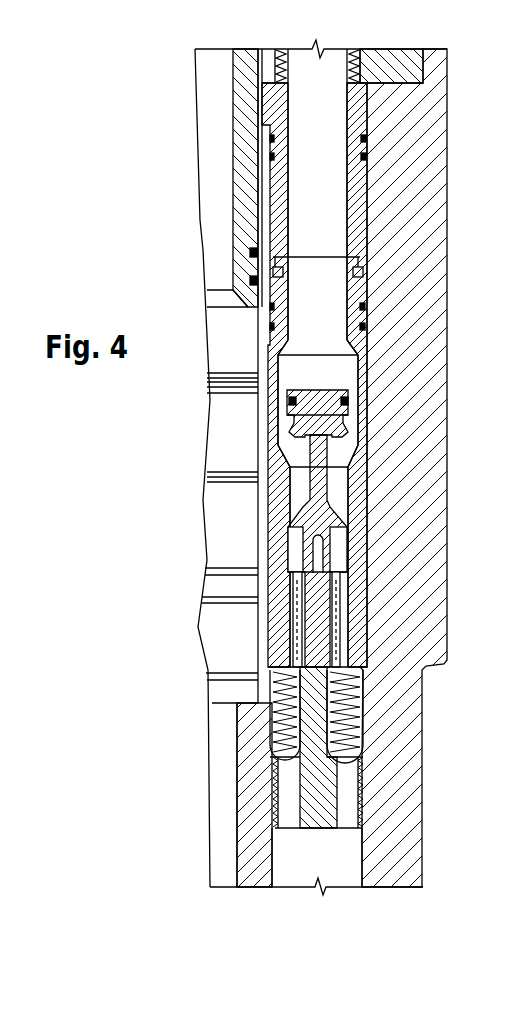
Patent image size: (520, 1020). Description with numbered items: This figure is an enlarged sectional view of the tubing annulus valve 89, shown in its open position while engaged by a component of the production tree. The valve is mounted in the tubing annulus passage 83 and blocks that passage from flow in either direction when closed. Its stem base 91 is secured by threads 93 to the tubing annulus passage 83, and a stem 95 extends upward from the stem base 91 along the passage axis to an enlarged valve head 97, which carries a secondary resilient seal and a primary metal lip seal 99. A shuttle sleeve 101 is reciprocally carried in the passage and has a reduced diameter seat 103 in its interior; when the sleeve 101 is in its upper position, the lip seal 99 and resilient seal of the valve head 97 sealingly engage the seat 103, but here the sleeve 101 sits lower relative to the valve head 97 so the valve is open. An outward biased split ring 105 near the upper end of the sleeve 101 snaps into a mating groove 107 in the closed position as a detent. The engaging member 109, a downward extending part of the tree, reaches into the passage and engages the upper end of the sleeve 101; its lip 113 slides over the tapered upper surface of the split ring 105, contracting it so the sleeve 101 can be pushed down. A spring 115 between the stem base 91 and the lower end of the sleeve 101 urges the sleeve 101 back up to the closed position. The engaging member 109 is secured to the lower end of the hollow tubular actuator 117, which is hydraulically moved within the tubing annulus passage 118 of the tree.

The tubing annulus passage 83 is at (331, 872).
The tubing annulus valve 89 is at (265, 515).
The stem base 91 is at (275, 786).
The threads 93 is at (275, 815).
The stem 95 is at (290, 688).
The valve head 97 is at (295, 390).
The lip seal 99 is at (290, 428).
The shuttle sleeve 101 is at (270, 320).
The seat 103 is at (300, 487).
The split ring 105 is at (273, 272).
The groove 107 is at (233, 195).
The engaging member 109 is at (257, 168).
The lip 113 is at (362, 272).
The spring 115 is at (283, 730).
The actuator 117 is at (280, 72).
The tubing annulus passage in tree 118 is at (313, 125).